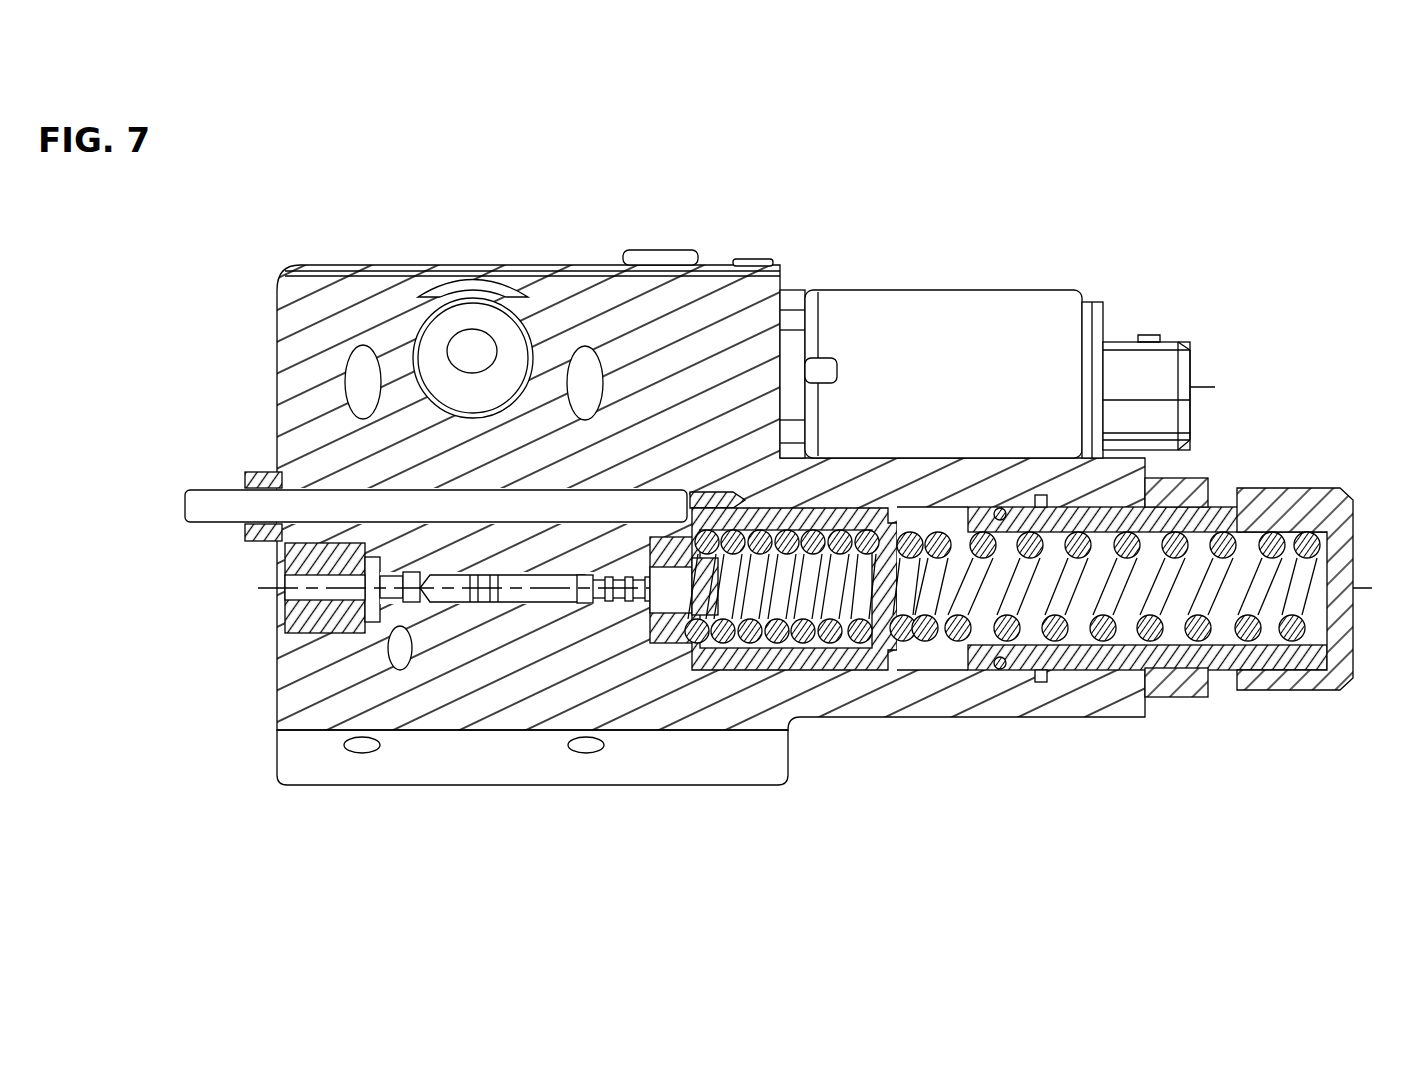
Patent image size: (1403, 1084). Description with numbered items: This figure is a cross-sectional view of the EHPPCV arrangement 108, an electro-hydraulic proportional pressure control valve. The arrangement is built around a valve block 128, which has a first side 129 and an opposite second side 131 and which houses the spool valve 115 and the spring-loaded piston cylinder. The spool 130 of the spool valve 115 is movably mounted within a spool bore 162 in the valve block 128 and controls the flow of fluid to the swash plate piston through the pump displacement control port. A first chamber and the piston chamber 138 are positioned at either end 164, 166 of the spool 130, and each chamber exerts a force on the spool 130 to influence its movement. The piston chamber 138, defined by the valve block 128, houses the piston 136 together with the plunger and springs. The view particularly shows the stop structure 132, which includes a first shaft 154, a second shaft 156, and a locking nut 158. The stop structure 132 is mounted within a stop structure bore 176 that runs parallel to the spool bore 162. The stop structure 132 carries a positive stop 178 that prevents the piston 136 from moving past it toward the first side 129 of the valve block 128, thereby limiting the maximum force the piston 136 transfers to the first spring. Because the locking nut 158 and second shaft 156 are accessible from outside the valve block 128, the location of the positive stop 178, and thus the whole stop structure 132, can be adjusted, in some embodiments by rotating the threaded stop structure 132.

The EHPPCV arrangement 108 is at (1332, 195).
The first side 129 is at (236, 276).
The valve block 128 is at (687, 290).
The stop structure 132 is at (474, 462).
The stop structure bore 176 is at (483, 488).
The first shaft 154 is at (542, 497).
The positive stop 178 is at (692, 495).
The locking nut 158 is at (253, 530).
The second shaft 156 is at (333, 517).
The end of the spool 164 is at (397, 590).
The spool valve 115 is at (525, 607).
The spool bore 162 is at (510, 604).
The spool 130 is at (568, 590).
The end of the spool 166 is at (642, 593).
The piston 136 is at (872, 658).
The piston chamber 138 is at (932, 672).
The second side 131 is at (1268, 354).